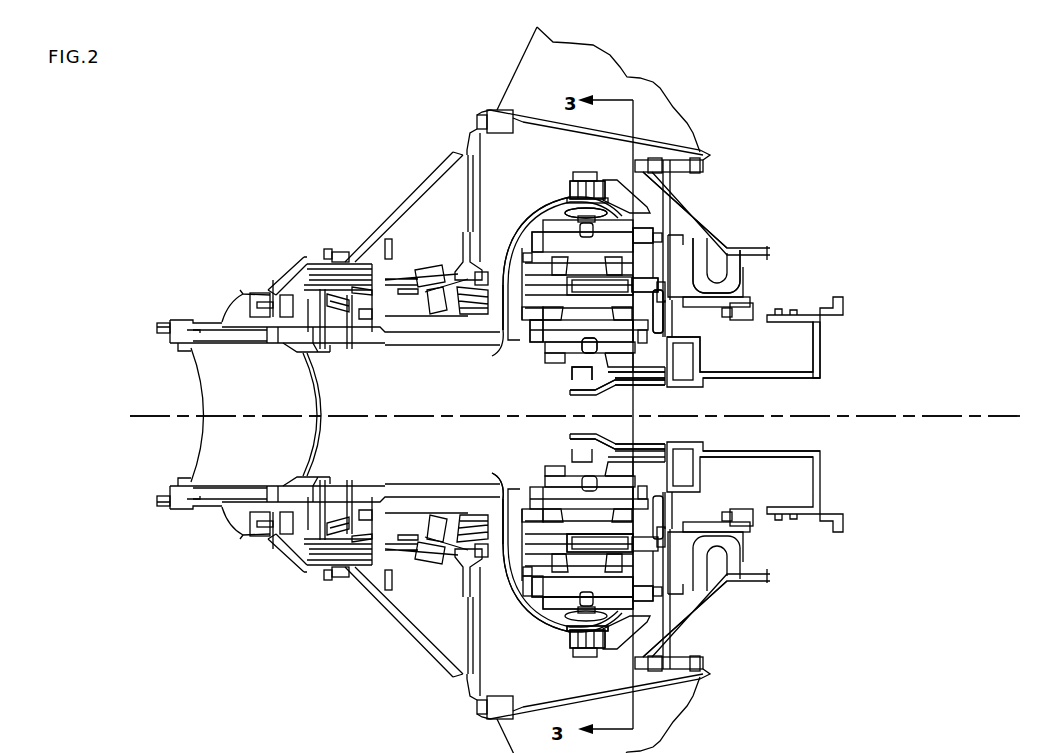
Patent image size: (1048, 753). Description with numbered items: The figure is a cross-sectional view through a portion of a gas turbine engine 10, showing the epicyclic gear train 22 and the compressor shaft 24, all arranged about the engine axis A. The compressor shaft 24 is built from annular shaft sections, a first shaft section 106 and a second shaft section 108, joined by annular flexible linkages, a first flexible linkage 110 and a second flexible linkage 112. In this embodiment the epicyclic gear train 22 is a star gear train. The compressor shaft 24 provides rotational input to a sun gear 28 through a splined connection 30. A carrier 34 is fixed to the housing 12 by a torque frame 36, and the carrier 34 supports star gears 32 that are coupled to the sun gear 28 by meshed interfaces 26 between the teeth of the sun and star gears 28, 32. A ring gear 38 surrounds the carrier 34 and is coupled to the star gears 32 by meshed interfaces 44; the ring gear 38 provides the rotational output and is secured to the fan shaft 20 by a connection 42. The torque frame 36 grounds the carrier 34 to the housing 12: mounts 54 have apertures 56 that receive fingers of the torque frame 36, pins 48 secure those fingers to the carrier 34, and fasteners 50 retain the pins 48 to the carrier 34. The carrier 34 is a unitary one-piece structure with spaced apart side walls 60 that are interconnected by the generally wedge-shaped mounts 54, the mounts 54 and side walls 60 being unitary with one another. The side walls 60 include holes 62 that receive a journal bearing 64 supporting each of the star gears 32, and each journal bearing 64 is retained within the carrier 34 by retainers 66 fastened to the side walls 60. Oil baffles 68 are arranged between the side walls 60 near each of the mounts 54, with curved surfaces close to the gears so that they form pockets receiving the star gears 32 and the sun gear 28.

The gas turbine engine 10 is at (793, 147).
The fixed housing 12 is at (743, 275).
The fan shaft 20 is at (500, 340).
The epicyclic gear train 22 is at (533, 625).
The compressor shaft 24 is at (750, 378).
The meshed interfaces 26 is at (575, 355).
The sun gear 28 is at (583, 368).
The splined connection 30 is at (628, 384).
The star gears 32 is at (617, 337).
The carrier 34 is at (540, 583).
The torque frame 36 is at (640, 578).
The ring gear 38 is at (562, 210).
The connection 42 is at (573, 186).
The meshed interfaces 44 is at (536, 204).
The pins 48 is at (585, 592).
The fasteners 50 is at (560, 566).
The mounts 54 is at (625, 550).
The apertures 56 is at (562, 597).
The side walls 60 is at (533, 240).
The holes 62 is at (652, 250).
The journal bearing 64 is at (652, 263).
The retainers 66 is at (525, 322).
The oil baffles 68 is at (577, 512).
The first shaft section 106 is at (715, 404).
The second shaft section 108 is at (730, 450).
The first flexible linkage 110 is at (710, 352).
The second flexible linkage 112 is at (826, 342).
The axis A is at (988, 412).